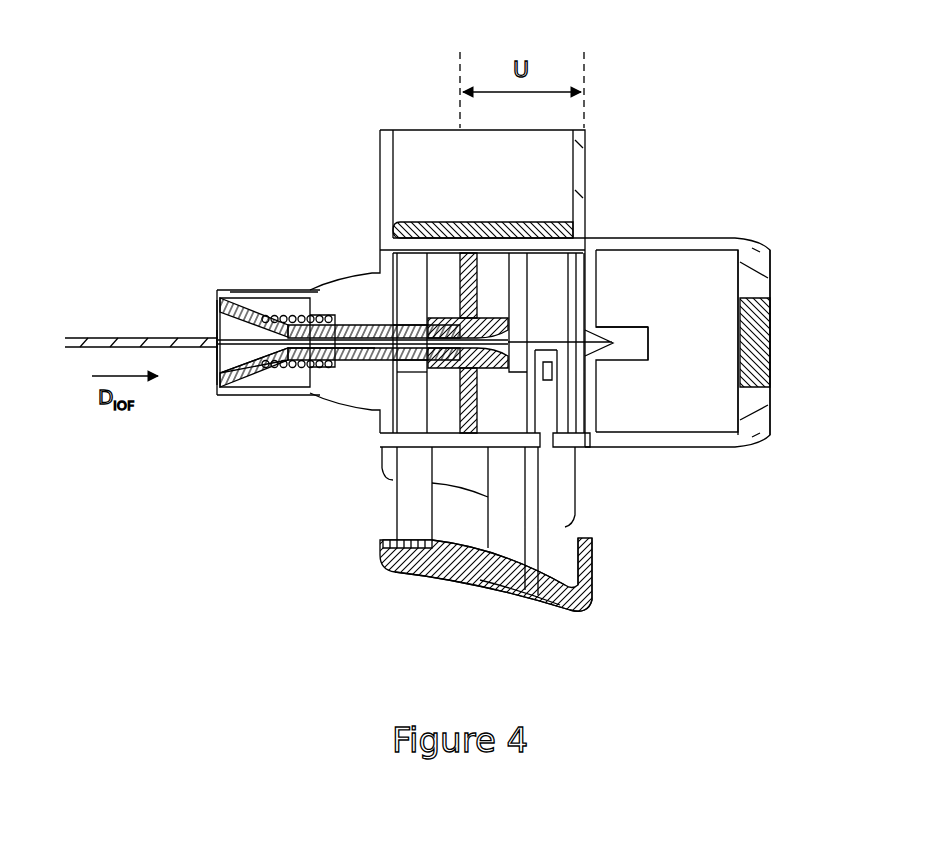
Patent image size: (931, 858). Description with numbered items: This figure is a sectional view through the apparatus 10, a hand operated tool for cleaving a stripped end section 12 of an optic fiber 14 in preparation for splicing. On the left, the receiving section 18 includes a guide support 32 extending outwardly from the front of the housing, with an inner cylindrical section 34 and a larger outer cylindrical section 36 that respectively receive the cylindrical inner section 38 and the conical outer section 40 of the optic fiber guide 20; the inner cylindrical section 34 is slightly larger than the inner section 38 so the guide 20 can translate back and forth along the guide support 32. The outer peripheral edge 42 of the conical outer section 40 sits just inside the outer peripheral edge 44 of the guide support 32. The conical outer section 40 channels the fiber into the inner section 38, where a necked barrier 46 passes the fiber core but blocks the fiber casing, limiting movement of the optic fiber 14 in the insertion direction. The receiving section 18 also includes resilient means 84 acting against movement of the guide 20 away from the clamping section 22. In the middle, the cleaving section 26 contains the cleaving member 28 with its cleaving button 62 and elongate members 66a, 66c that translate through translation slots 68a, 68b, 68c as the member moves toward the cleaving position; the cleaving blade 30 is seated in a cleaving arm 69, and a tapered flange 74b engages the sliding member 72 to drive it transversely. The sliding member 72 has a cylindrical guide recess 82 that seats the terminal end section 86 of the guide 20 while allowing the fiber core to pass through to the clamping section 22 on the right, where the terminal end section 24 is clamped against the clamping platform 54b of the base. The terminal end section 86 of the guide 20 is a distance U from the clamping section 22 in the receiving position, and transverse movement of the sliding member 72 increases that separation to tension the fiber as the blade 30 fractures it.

The apparatus 10 is at (428, 128).
The stripped end section 12 is at (593, 262).
The optic fiber 14 is at (170, 336).
The receiving section 18 is at (278, 290).
The optic fiber guide 20 is at (368, 370).
The clamping section 22 is at (668, 237).
The terminal end section 24 is at (597, 357).
The cleaving section 26 is at (515, 605).
The cleaving member 28 is at (513, 538).
The cleaving blade 30 is at (549, 374).
The guide support 32 is at (232, 292).
The inner cylindrical section 34 is at (340, 318).
The outer cylindrical section 36 is at (262, 393).
The inner section 38 is at (347, 365).
The conical outer section 40 is at (257, 402).
The outer peripheral edge 42 is at (217, 355).
The outer peripheral edge 44 is at (217, 323).
The necked barrier 46 is at (410, 370).
The clamping platform 54b is at (633, 347).
The cleaving button 62 is at (465, 582).
The elongate member 66a is at (415, 573).
The elongate member 66c is at (590, 577).
The translation slot 68a is at (383, 483).
The translation slot 68b is at (448, 318).
The translation slot 68c is at (553, 250).
The cleaving arm 69 is at (583, 617).
The sliding member 72 is at (462, 262).
The tapered flange 74b is at (513, 597).
The cylindrical guide recess 82 is at (433, 322).
The resilient means 84 is at (268, 375).
The terminal end section 86 is at (465, 275).